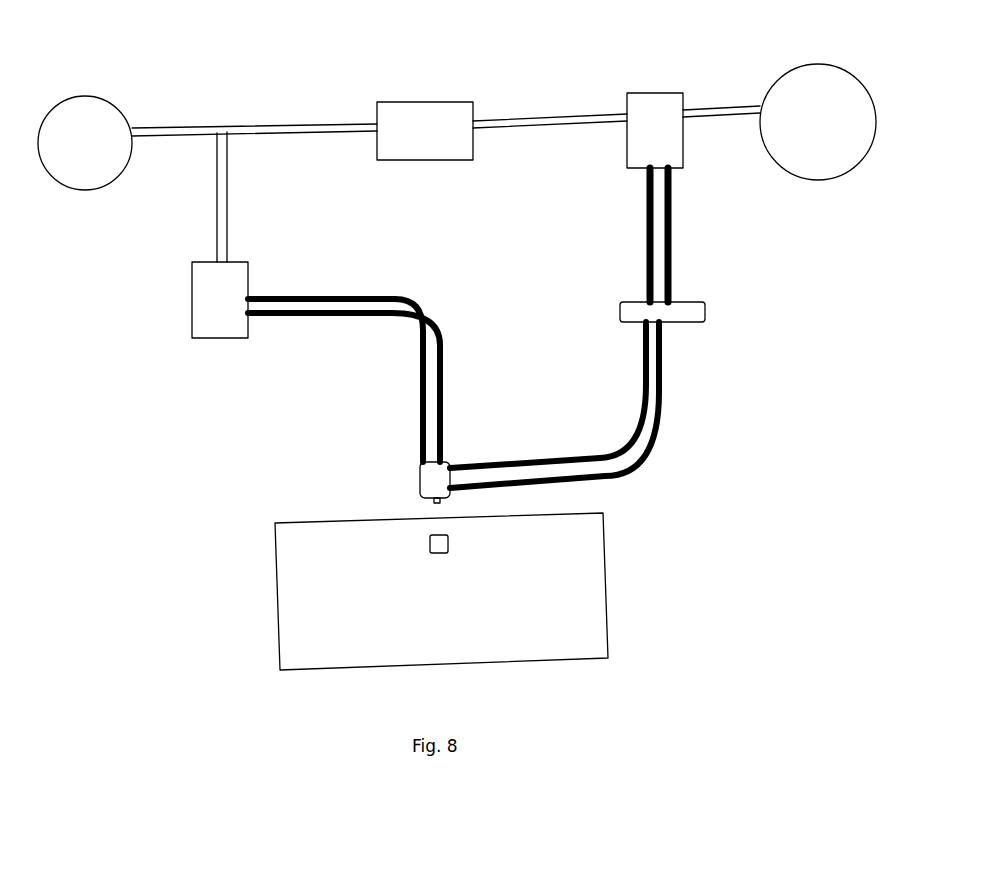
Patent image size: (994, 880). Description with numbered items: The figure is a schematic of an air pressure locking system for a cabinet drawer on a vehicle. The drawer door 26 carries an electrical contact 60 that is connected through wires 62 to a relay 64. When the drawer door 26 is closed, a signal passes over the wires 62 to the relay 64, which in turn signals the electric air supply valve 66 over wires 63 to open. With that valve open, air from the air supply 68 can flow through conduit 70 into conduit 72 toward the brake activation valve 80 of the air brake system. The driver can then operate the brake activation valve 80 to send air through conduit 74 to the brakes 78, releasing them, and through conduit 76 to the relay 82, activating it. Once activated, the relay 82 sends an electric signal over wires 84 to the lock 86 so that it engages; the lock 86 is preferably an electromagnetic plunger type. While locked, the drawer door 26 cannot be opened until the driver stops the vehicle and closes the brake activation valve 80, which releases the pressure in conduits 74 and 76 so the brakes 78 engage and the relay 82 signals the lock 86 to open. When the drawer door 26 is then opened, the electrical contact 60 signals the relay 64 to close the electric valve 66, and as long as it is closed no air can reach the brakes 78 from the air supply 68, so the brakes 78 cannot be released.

The drawer door 26 is at (580, 625).
The electrical contact 60 is at (445, 555).
The wires 62 is at (660, 418).
The wires 63 is at (672, 243).
The relay 64 is at (700, 306).
The electric air supply valve 66 is at (655, 120).
The air supply 68 is at (846, 97).
The conduit 70 is at (722, 108).
The conduit 72 is at (540, 118).
The conduit 74 is at (297, 126).
The conduit 76 is at (222, 200).
The brakes 78 is at (88, 125).
The brake activation valve 80 is at (430, 115).
The relay 82 is at (226, 330).
The wires 84 is at (440, 345).
The lock 86 is at (420, 470).